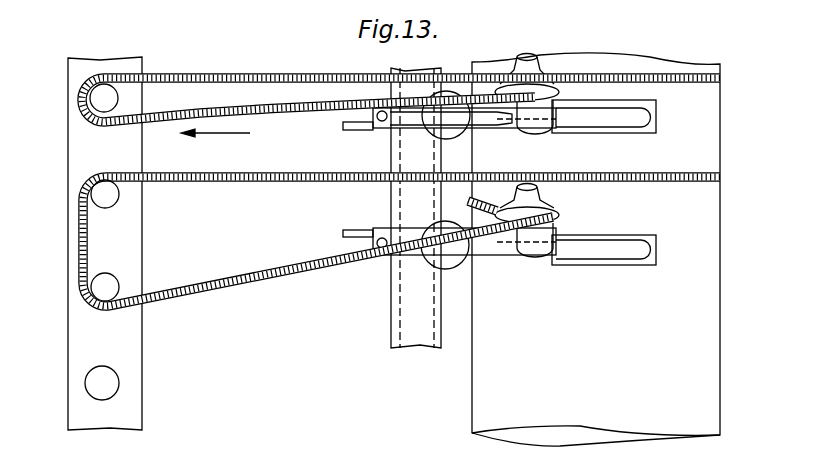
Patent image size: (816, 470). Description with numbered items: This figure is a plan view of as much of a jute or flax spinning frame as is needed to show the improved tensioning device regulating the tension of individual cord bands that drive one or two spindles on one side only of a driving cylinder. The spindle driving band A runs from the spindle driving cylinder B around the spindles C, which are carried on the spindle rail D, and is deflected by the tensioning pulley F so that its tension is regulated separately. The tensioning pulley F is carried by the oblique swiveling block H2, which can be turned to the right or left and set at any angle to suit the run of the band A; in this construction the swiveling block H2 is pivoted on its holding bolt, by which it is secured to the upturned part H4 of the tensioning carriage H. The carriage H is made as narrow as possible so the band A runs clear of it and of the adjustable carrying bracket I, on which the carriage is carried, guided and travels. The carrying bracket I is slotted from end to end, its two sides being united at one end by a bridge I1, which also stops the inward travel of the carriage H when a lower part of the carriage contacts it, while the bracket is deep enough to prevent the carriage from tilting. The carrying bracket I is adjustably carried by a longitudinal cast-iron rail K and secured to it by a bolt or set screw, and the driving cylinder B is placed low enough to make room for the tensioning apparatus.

The spindle driving band A is at (314, 181).
The spindle driving cylinder B is at (596, 249).
The spindle C is at (100, 98).
The spindle rail D is at (136, 240).
The tensioning pulley F is at (540, 82).
The tensioning carriage H is at (497, 115).
The swiveling block H2 is at (489, 193).
The upturned part of the carriage H4 is at (551, 265).
The carrying bracket I is at (362, 128).
The bridge I1 is at (603, 198).
The rail K is at (400, 316).